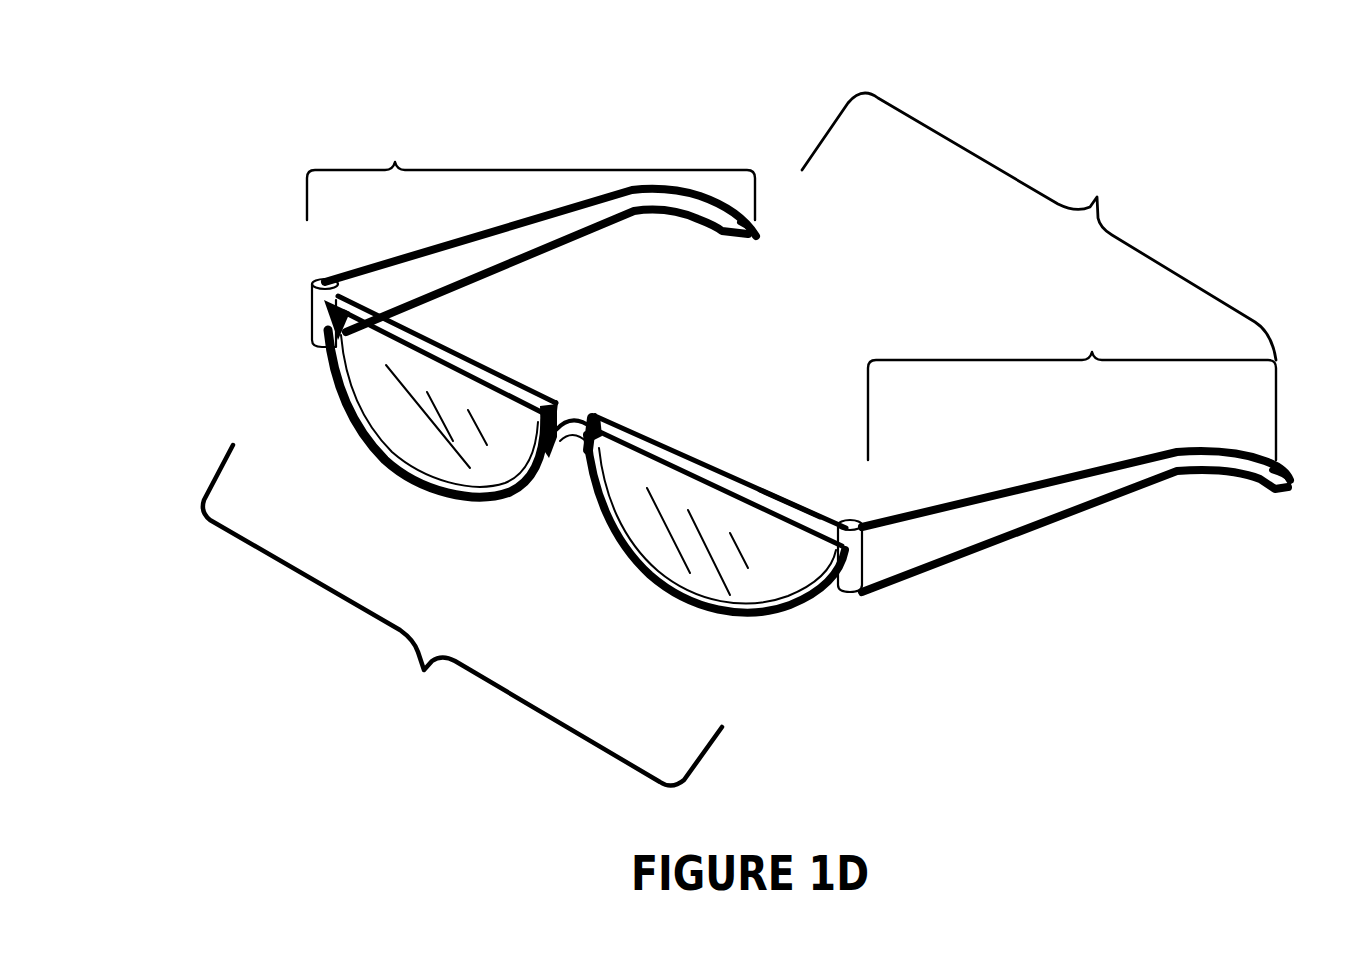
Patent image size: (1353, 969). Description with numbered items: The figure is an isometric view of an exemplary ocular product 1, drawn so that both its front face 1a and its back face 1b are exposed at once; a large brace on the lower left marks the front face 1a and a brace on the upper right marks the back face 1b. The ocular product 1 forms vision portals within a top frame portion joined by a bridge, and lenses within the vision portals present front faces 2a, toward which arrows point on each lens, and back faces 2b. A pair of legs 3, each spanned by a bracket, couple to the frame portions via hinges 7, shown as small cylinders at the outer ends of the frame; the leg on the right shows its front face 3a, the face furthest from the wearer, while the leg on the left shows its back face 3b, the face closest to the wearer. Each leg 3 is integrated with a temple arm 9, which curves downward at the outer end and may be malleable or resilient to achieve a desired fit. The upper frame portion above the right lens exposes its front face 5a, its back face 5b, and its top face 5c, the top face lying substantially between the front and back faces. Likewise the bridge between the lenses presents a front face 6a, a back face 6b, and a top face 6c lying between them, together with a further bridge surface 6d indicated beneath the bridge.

The ocular product 1 is at (228, 99).
The front face 1a is at (462, 615).
The back face 1b is at (1039, 226).
The front plane of vision portal 2a is at (447, 428).
The back plane of vision portal 2b is at (413, 385).
The leg 3 is at (791, 288).
The front face of leg 3a is at (1076, 521).
The back face of leg 3b is at (540, 260).
The front face of upper frame portion 5a is at (727, 504).
The back face of upper frame portion 5b is at (653, 430).
The top face of upper frame portion 5c is at (810, 513).
The front face of bridge 6a is at (565, 449).
The back face of bridge 6b is at (601, 417).
The top face of bridge 6c is at (577, 418).
The bridge lower arc 6d is at (572, 462).
The hinge 7 is at (311, 302).
The temple arm 9 is at (762, 238).